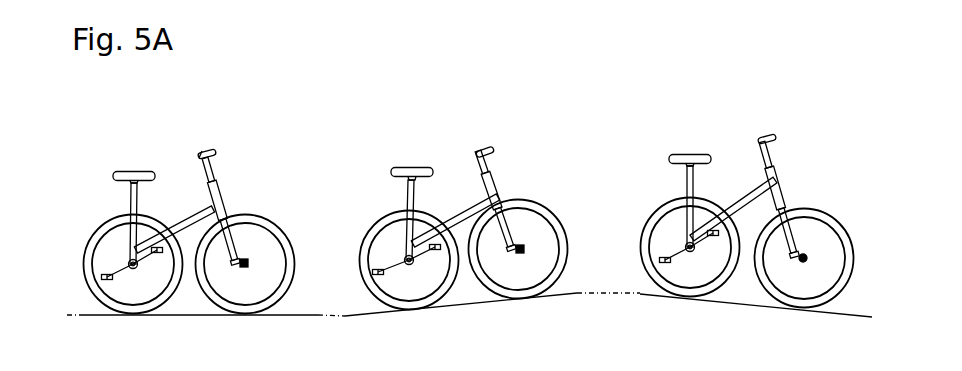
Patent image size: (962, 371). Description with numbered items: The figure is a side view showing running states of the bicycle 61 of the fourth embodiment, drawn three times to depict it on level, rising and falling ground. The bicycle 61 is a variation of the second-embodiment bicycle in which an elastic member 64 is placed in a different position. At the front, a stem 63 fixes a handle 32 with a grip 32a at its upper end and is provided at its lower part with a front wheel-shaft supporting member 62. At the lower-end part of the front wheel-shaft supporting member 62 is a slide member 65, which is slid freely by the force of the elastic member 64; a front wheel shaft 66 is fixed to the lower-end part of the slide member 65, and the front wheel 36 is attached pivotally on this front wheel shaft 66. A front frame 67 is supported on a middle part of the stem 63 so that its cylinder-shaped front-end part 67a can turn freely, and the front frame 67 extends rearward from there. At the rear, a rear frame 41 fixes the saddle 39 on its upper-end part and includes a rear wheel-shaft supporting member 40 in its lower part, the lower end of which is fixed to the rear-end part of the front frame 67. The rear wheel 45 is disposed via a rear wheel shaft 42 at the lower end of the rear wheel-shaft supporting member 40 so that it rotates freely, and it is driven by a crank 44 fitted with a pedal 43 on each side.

The bicycle 61 is at (197, 134).
The handle 32 is at (217, 152).
The grip 32a is at (205, 150).
The stem 63 is at (222, 157).
The front frame 67 is at (192, 218).
The front-end part 67a is at (230, 184).
The front wheel-shaft supporting member 62 is at (233, 214).
The elastic member 64 is at (236, 234).
The front wheel shaft 66 is at (252, 262).
The front wheel 36 is at (292, 268).
The slide member 65 is at (238, 287).
The saddle 39 is at (128, 171).
The rear frame 41 is at (129, 202).
The rear wheel-shaft supporting member 40 is at (117, 232).
The crank 44 is at (95, 258).
The pedal 43 is at (97, 278).
The rear wheel 45 is at (93, 298).
The rear wheel shaft 42 is at (124, 276).